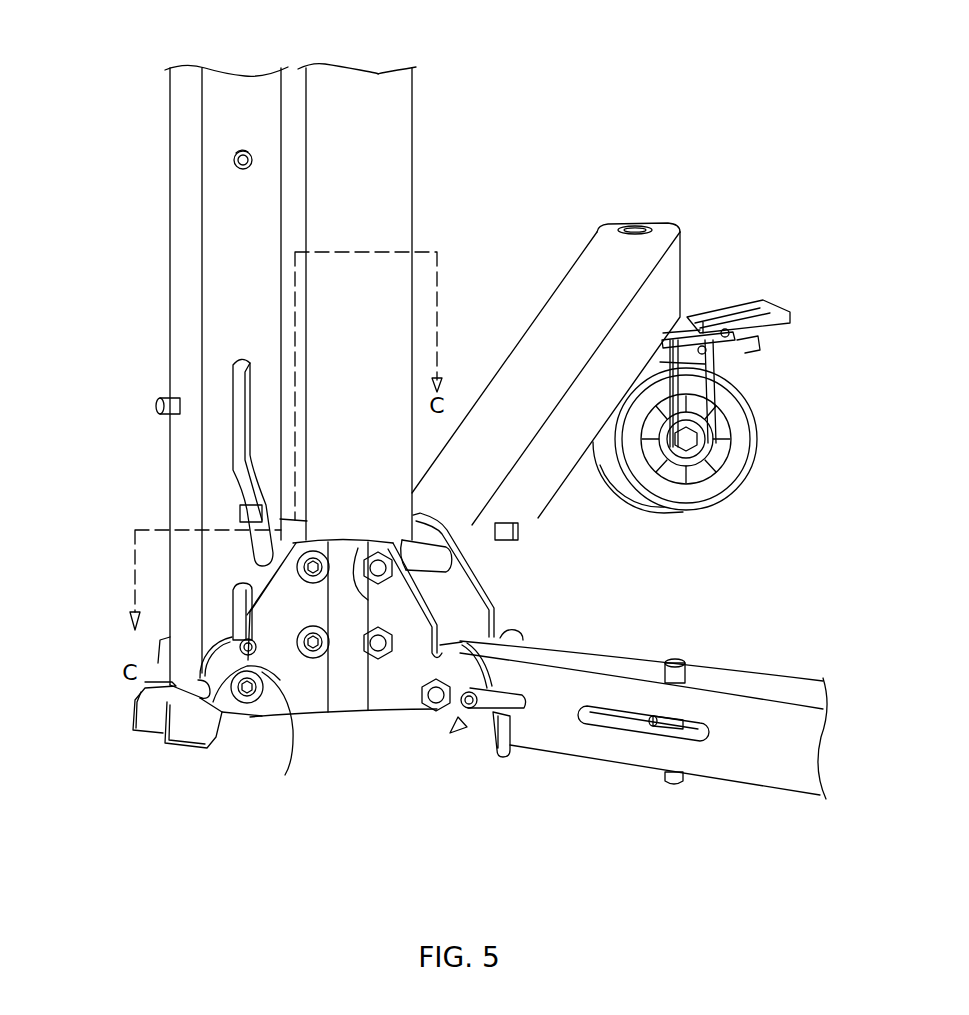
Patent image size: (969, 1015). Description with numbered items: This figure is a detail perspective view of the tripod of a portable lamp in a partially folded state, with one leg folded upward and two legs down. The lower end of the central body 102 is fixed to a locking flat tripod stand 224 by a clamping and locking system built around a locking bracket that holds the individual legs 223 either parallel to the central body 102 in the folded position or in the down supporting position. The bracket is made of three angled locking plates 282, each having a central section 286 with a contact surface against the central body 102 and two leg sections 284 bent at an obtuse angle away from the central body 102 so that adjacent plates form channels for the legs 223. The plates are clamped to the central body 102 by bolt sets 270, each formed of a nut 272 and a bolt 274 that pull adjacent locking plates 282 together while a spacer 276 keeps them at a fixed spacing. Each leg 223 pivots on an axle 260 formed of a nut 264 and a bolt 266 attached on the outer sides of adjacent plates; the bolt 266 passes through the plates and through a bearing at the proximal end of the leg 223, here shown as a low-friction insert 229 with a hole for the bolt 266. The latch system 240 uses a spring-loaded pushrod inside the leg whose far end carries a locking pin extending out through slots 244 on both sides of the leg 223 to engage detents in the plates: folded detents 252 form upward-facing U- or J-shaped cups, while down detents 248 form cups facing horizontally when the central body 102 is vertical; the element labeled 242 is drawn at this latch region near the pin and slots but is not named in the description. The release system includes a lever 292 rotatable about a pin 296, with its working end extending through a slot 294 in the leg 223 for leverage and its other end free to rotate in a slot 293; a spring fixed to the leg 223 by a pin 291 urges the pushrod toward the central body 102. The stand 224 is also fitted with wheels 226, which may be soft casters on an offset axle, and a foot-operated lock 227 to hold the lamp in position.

The central body 102 is at (418, 110).
The legs 223 is at (180, 98).
The locking flat tripod stand 224 is at (731, 118).
The wheels 226 is at (758, 428).
The foot-operated lock 227 is at (780, 303).
The insert 229 is at (185, 686).
The latch system 240 is at (458, 738).
The pin 242 is at (478, 696).
The slot 244 is at (235, 595).
The down detents 248 is at (221, 723).
The folded detents 252 is at (168, 640).
The axle 260 is at (263, 705).
The nut 264 is at (270, 712).
The bolt 266 is at (430, 712).
The bolt sets 270 is at (492, 556).
The nut 272 is at (444, 561).
The bolt 274 is at (312, 548).
The spacer 276 is at (445, 520).
The locking plates 282 is at (141, 724).
The leg sections 284 is at (298, 590).
The central section 286 is at (342, 566).
The pin 291 is at (235, 162).
The lever 292 is at (242, 520).
The slot 293 is at (605, 718).
The slot 294 is at (235, 367).
The pin 296 is at (158, 405).